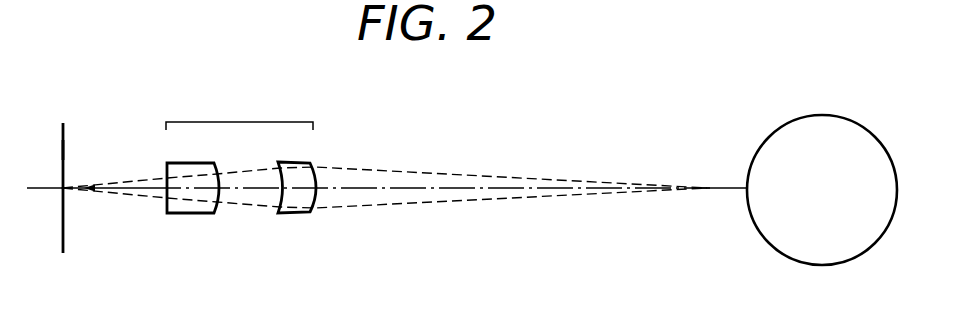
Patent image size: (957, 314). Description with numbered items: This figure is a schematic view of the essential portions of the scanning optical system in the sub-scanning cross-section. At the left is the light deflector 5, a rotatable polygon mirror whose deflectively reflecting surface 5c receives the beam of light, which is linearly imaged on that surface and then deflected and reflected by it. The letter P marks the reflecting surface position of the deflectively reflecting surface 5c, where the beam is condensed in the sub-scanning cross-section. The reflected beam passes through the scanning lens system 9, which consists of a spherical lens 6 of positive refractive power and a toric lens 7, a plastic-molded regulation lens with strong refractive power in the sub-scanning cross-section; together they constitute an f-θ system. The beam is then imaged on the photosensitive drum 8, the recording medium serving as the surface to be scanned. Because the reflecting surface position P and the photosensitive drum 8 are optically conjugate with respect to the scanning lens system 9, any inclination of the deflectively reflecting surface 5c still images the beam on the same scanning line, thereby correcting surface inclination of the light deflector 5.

The light deflector 5 is at (62, 171).
The deflectively reflecting surface 5c is at (63, 152).
The reflecting surface position P is at (63, 193).
The scanning lens system 9 is at (241, 152).
The spherical lens 6 is at (193, 172).
The toric lens 7 is at (297, 172).
The photosensitive drum 8 is at (813, 190).